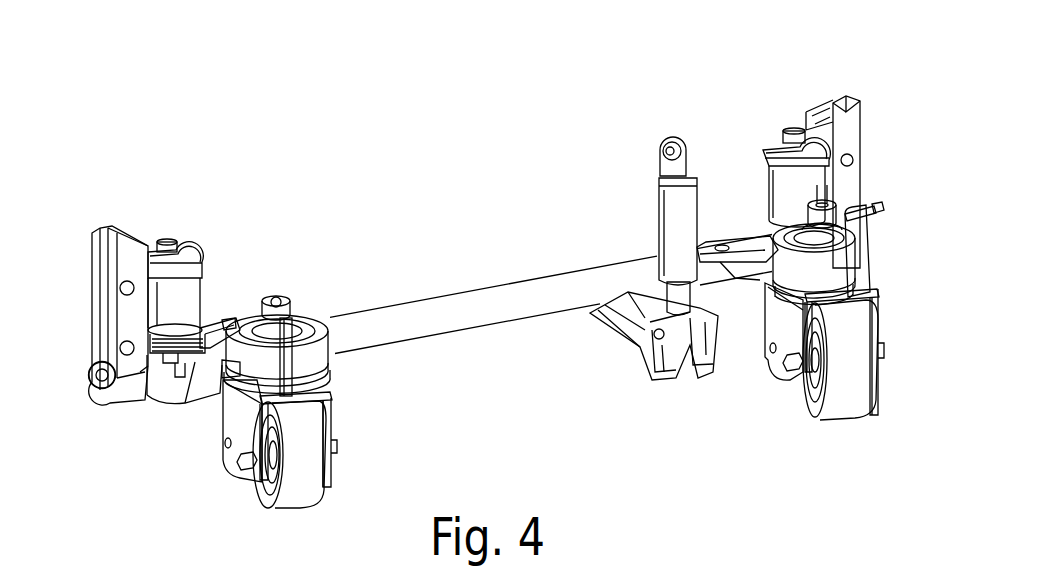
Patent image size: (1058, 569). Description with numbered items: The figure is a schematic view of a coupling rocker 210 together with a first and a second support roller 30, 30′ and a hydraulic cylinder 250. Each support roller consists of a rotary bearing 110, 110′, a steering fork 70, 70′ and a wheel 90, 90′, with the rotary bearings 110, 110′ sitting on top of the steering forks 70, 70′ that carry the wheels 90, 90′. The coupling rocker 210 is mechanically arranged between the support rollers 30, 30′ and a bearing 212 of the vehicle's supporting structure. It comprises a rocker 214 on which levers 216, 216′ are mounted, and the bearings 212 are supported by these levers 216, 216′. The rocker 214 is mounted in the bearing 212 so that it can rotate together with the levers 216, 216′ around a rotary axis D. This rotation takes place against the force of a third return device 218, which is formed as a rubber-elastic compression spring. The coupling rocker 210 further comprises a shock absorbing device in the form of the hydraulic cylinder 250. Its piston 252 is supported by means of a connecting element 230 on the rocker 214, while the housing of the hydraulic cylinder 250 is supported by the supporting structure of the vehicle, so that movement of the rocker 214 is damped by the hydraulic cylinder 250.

The coupling rocker 210 is at (443, 291).
The bearing 212 is at (125, 229).
The rocker 214 is at (190, 364).
The lever 216 is at (226, 324).
The lever 216′ is at (766, 256).
The return device 218 is at (202, 292).
The connecting element 230 is at (672, 350).
The hydraulic cylinder 250 is at (655, 201).
The piston 252 is at (660, 296).
The rotary bearing 110 is at (315, 357).
The rotary bearing 110′ is at (838, 263).
The steering fork 70 is at (240, 433).
The steering fork 70′ is at (790, 355).
The wheel 90 is at (260, 506).
The wheel 90′ is at (812, 416).
The support roller 30 is at (349, 445).
The support roller 30′ is at (777, 392).
The rotary axis D is at (92, 380).